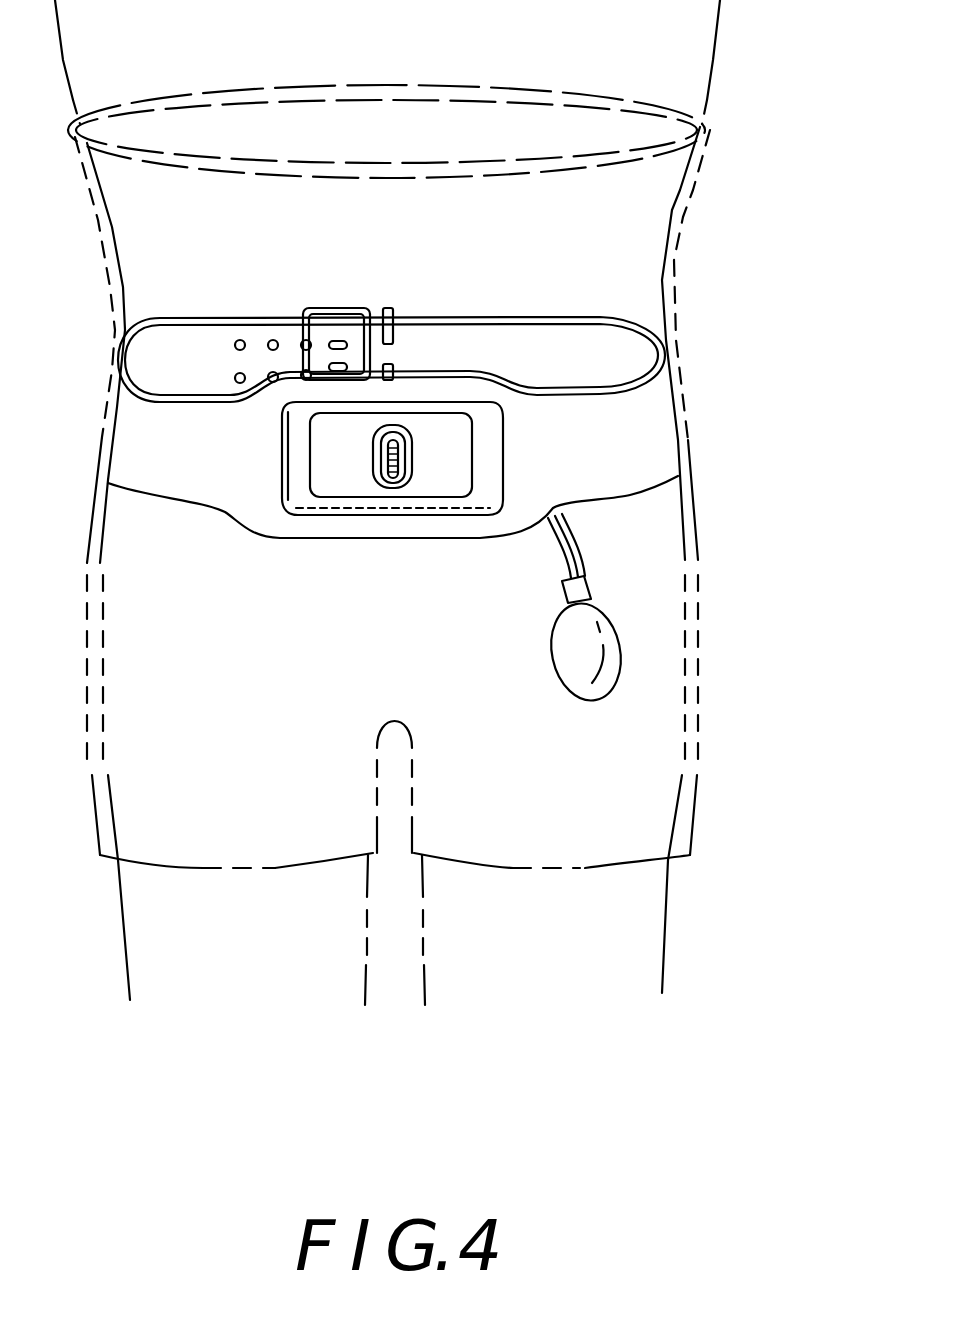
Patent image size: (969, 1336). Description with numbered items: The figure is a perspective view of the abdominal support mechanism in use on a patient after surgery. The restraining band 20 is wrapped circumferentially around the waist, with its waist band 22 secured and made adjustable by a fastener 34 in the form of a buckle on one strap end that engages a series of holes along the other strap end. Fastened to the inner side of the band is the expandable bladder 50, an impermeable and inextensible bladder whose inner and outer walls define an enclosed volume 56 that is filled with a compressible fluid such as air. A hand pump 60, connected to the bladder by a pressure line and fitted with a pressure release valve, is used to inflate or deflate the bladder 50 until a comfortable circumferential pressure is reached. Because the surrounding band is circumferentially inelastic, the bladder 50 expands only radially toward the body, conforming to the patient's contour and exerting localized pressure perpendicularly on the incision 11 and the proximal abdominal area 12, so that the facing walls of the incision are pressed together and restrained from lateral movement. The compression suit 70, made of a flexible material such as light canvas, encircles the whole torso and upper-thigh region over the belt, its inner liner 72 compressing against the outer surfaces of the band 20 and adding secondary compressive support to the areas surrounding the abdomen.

The incision 11 is at (380, 466).
The abdominal area 12 is at (408, 448).
The restraining band 20 is at (670, 383).
The waist band 22 is at (620, 490).
The fastener 34 is at (335, 305).
The expandable bladder 50 is at (447, 487).
The enclosed volume 56 is at (405, 490).
The hand pump 60 is at (610, 665).
The compression suit 70 is at (690, 190).
The inner liner 72 is at (682, 788).